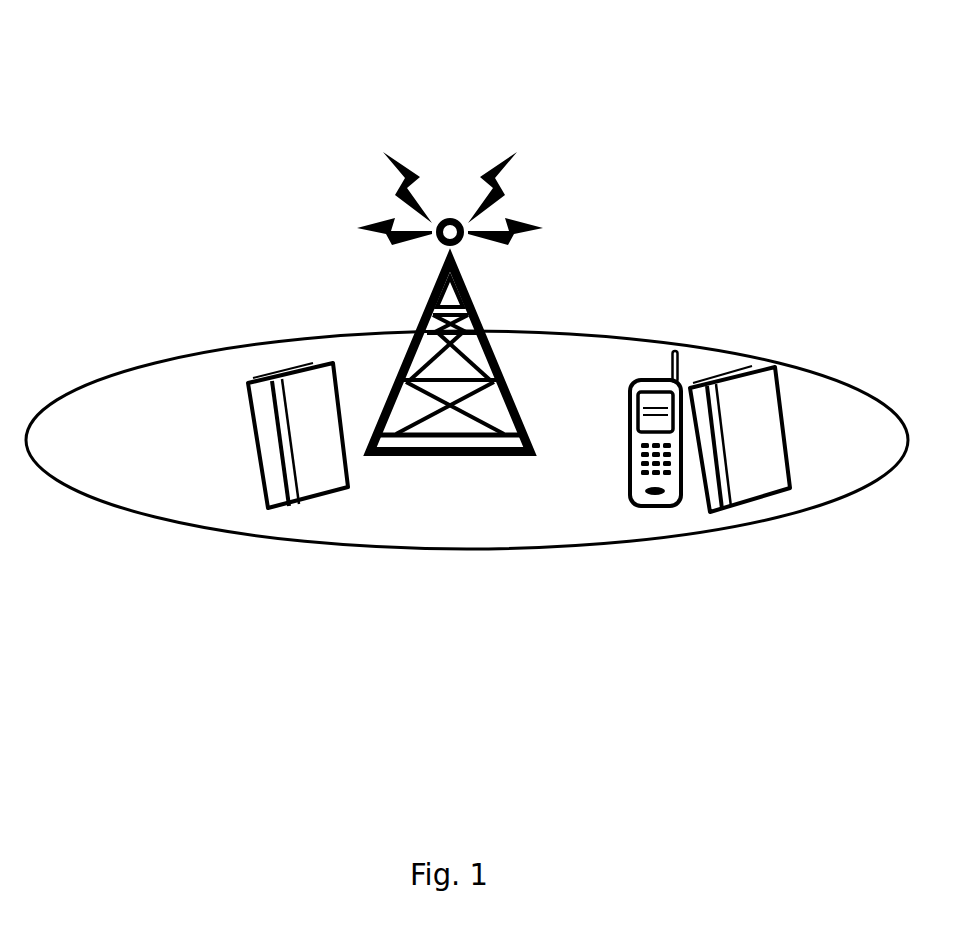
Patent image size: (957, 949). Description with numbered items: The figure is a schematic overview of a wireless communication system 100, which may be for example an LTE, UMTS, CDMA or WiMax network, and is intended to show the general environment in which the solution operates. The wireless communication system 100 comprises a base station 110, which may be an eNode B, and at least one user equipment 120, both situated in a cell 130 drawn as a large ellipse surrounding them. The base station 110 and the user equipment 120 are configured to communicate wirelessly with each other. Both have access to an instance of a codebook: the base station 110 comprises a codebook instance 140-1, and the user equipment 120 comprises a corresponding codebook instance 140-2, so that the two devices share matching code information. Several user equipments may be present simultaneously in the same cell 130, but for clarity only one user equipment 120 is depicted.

The wireless communication system 100 is at (760, 99).
The base station 110 is at (417, 318).
The user equipment 120 is at (632, 410).
The cell 130 is at (603, 545).
The codebook instance 140-1 is at (273, 492).
The codebook instance 140-2 is at (713, 495).